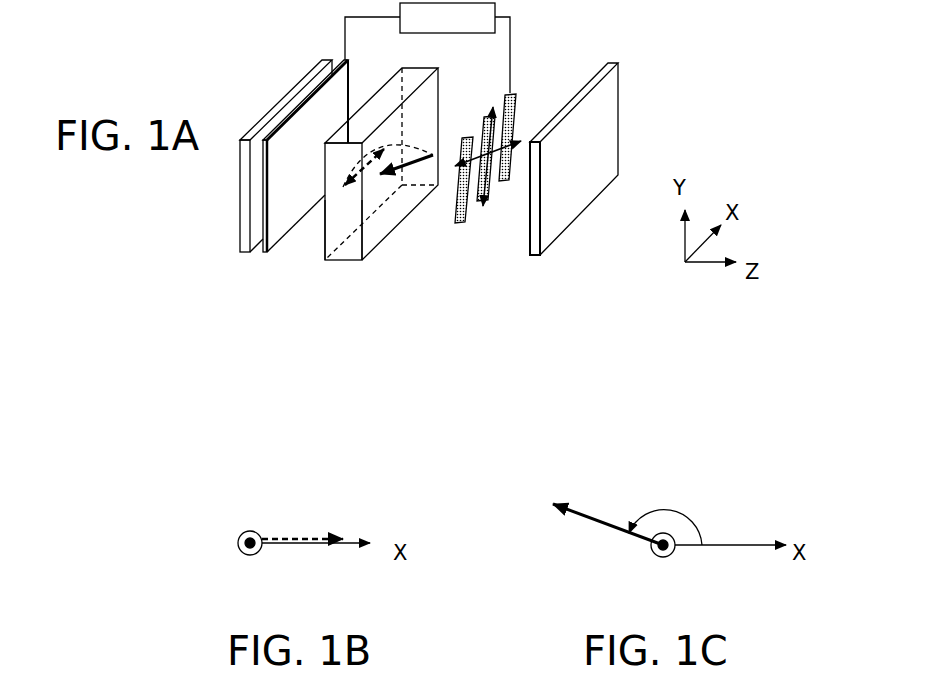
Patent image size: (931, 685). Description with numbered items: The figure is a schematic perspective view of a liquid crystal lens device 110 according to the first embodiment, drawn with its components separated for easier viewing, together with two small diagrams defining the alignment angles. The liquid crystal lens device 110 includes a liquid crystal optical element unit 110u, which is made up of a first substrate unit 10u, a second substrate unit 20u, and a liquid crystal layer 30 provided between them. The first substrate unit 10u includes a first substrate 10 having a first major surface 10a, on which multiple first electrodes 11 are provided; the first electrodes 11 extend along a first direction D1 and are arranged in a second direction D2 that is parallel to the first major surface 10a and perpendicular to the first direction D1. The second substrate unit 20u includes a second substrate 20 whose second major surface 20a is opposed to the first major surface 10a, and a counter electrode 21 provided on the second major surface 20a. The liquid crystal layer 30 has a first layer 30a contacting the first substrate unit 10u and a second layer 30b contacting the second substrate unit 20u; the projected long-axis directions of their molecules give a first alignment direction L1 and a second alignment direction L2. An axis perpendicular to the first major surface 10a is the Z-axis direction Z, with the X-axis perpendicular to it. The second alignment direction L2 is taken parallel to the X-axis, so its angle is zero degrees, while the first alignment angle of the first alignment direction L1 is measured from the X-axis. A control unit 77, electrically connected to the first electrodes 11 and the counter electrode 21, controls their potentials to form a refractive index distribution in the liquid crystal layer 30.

In FIG. 1A, the control unit 77 is at (483, 8).
In FIG. 1A, the liquid crystal lens device 110 is at (664, 91).
In FIG. 1A, the liquid crystal optical element unit 110u is at (540, 345).
In FIG. 1A, the second substrate 20 is at (240, 251).
In FIG. 1A, the second major surface 20a is at (263, 245).
In FIG. 1A, the counter electrode 21 is at (275, 230).
In FIG. 1A, the second substrate unit 20u is at (295, 305).
In FIG. 1A, the liquid crystal layer 30 is at (370, 208).
In FIG. 1A, the first layer 30a is at (343, 253).
In FIG. 1A, the second layer 30b is at (325, 261).
In FIG. 1A, the first electrodes 11 is at (458, 224).
In FIG. 1A, the first substrate 10 is at (538, 256).
In FIG. 1A, the first major surface 10a is at (528, 230).
In FIG. 1A, the first substrate unit 10u is at (580, 307).
In FIG. 1A, the first alignment direction L1 is at (417, 150).
In FIG. 1C, the first alignment direction L1 is at (600, 520).
In FIG. 1A, the second alignment direction L2 is at (365, 160).
In FIG. 1B, the second alignment direction L2 is at (290, 537).
In FIG. 1A, the first direction D1 is at (485, 128).
In FIG. 1A, the second direction D2 is at (490, 112).
In FIG. 1B, the Z-axis direction Z is at (242, 556).
In FIG. 1C, the Z-axis direction Z is at (655, 555).